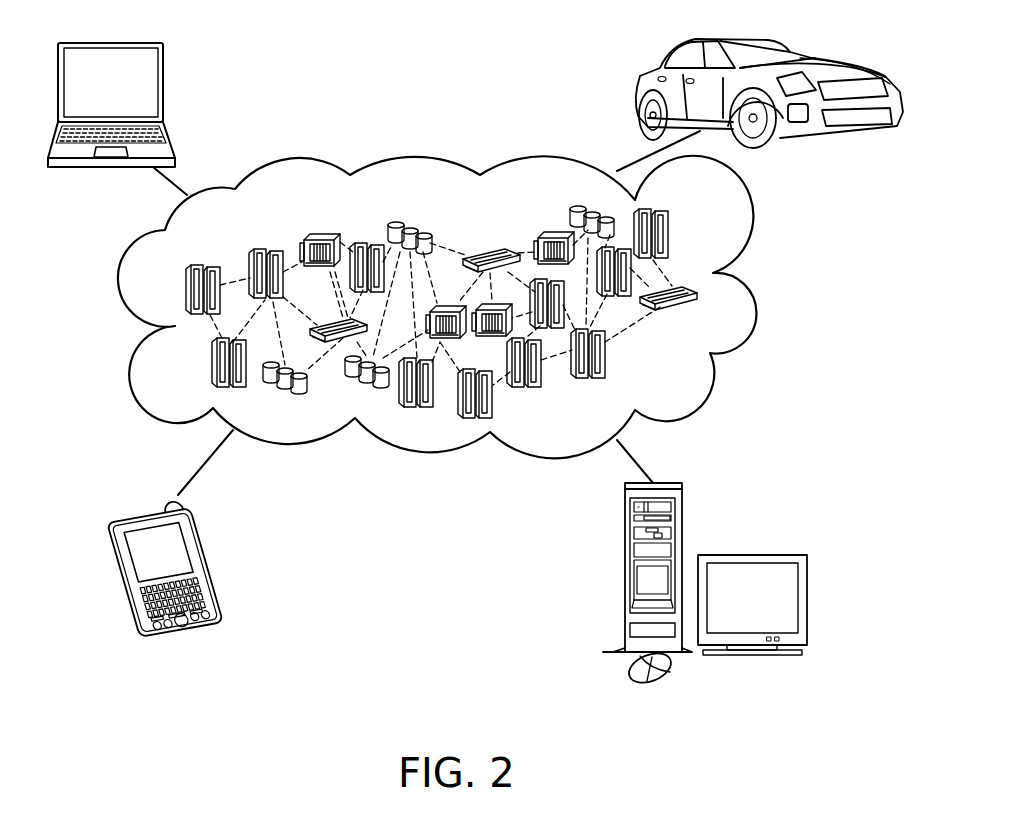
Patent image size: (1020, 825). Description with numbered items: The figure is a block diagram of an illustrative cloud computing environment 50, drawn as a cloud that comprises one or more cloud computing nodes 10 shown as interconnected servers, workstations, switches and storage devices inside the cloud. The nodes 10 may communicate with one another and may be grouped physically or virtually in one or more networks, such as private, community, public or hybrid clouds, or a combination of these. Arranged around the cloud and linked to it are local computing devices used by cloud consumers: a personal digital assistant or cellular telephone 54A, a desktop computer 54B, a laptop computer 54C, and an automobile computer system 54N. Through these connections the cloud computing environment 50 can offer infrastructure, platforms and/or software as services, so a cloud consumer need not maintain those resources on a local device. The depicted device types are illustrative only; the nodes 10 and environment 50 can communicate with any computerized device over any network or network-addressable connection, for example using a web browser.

The cloud computing nodes 10 is at (690, 376).
The cloud computing environment 50 is at (747, 297).
The personal digital assistant (PDA) or cellular telephone 54A is at (205, 543).
The desktop computer 54B is at (625, 528).
The laptop computer 54C is at (165, 84).
The automobile computer system 54N is at (635, 86).